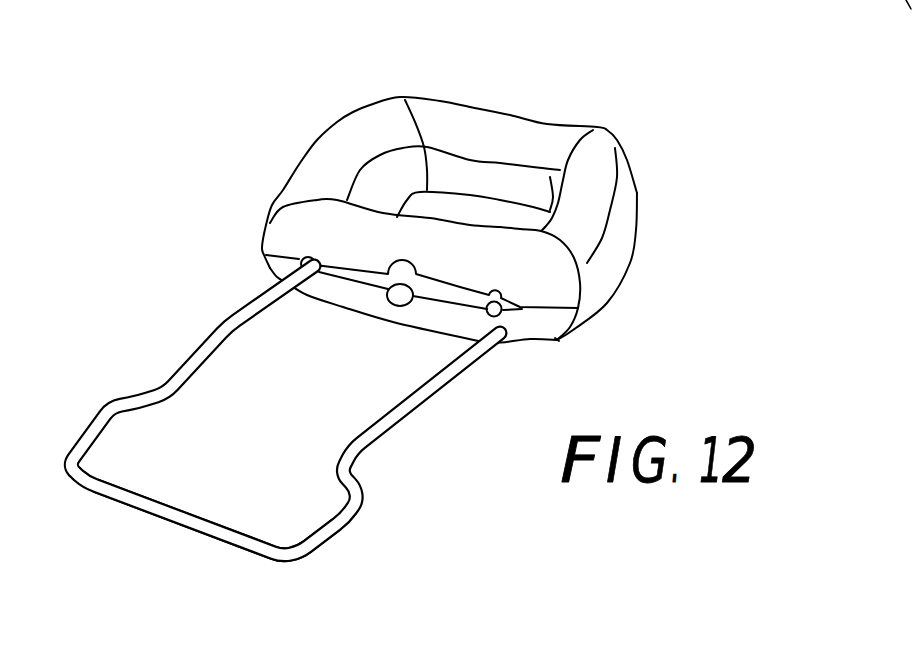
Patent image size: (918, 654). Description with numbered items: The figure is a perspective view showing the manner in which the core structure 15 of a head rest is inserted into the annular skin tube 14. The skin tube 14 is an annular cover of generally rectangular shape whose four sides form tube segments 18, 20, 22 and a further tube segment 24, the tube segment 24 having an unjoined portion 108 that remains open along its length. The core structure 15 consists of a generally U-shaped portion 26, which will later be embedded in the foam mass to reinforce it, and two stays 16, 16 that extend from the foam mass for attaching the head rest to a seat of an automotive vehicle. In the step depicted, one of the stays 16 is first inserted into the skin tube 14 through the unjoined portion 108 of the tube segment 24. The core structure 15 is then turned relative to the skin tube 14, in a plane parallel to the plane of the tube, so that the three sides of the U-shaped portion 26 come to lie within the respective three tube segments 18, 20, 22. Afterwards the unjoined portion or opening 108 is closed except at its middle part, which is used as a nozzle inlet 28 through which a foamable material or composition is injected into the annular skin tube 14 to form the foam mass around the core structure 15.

The annular skin tube 14 is at (484, 76).
The core structure 15 is at (285, 423).
The stay 16 is at (217, 330).
The tube segment 18 is at (542, 142).
The tube segment 20 is at (333, 150).
The tube segment 22 is at (620, 222).
The tube segment 24 is at (540, 293).
The U-shaped portion 26 is at (333, 527).
The nozzle inlet 28 is at (398, 300).
The unjoined portion 108 is at (362, 281).